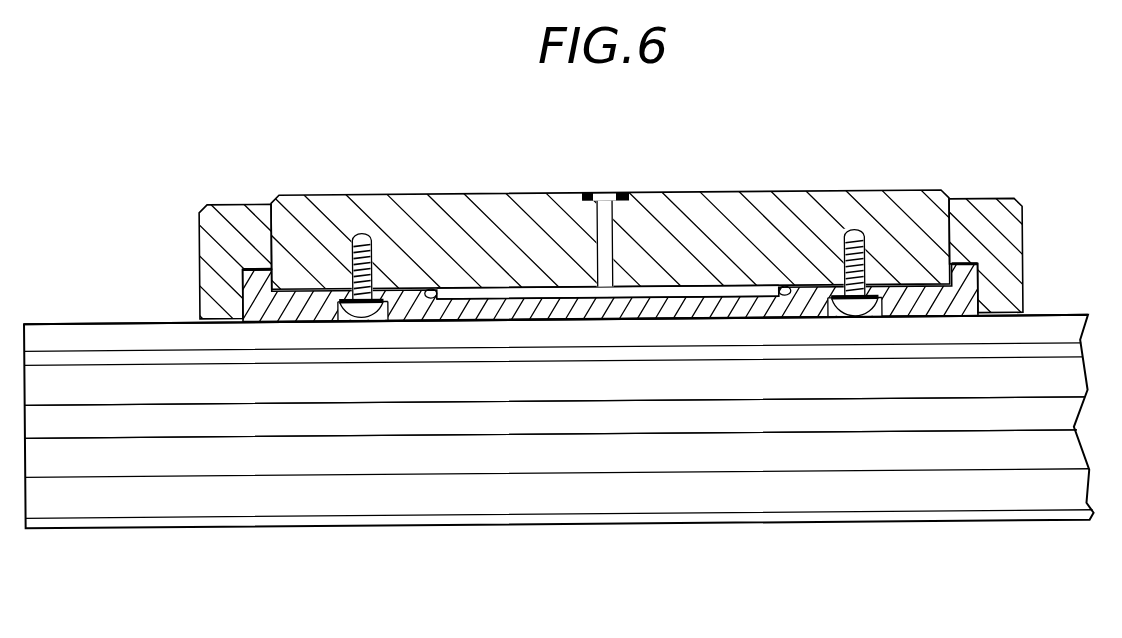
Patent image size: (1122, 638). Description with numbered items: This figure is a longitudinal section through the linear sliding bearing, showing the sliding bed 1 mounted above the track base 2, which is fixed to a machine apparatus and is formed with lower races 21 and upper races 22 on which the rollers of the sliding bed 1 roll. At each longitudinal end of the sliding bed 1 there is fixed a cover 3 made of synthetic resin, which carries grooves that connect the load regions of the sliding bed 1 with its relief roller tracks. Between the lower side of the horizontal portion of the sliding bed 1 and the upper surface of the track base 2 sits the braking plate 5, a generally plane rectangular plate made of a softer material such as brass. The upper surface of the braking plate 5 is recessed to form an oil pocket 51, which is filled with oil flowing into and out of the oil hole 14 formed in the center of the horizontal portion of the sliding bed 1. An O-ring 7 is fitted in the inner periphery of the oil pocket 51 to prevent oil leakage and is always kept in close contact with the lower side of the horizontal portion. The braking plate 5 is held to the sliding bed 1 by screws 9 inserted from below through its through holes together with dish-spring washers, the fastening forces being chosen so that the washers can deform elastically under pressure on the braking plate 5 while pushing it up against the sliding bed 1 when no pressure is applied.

The sliding bed 1 is at (477, 193).
The track base 2 is at (470, 526).
The cover 3 is at (204, 204).
The braking plate 5 is at (310, 303).
The O-ring 7 is at (782, 289).
The screws 9 is at (359, 232).
The oil hole 14 is at (615, 202).
The lower races 21 is at (138, 336).
The upper races 22 is at (183, 396).
The oil pocket 51 is at (708, 288).